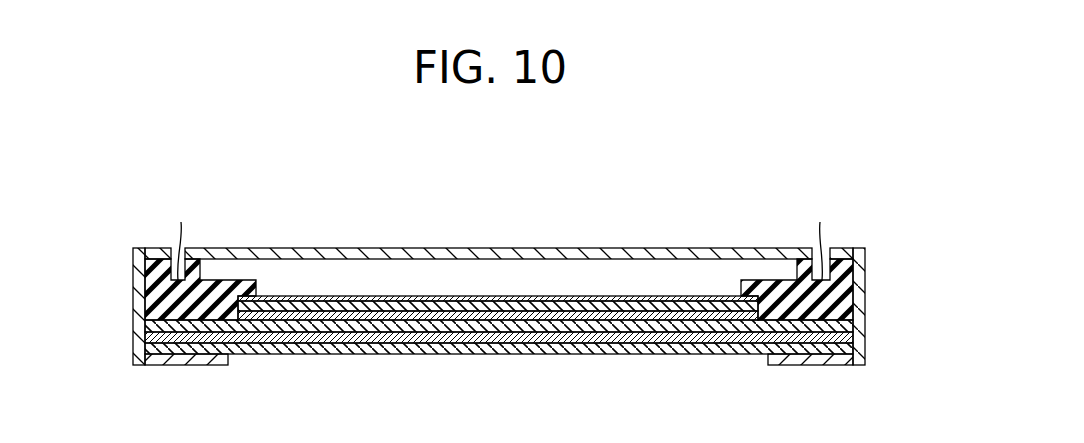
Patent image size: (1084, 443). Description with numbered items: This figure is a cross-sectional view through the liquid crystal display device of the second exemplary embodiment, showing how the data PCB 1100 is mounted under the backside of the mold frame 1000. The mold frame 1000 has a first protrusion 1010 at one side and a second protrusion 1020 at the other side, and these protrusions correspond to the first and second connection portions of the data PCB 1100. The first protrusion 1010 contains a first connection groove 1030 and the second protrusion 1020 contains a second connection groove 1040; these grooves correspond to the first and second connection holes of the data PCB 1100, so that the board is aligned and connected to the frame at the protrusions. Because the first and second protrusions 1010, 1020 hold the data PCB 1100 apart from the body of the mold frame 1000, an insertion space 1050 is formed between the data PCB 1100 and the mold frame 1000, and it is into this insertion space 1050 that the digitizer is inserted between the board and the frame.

The mold frame 1000 is at (180, 297).
The first protrusion 1010 is at (148, 267).
The second protrusion 1020 is at (855, 268).
The first connection groove 1030 is at (185, 238).
The second connection groove 1040 is at (817, 239).
The insertion space 1050 is at (511, 276).
The data PCB 1100 is at (364, 256).